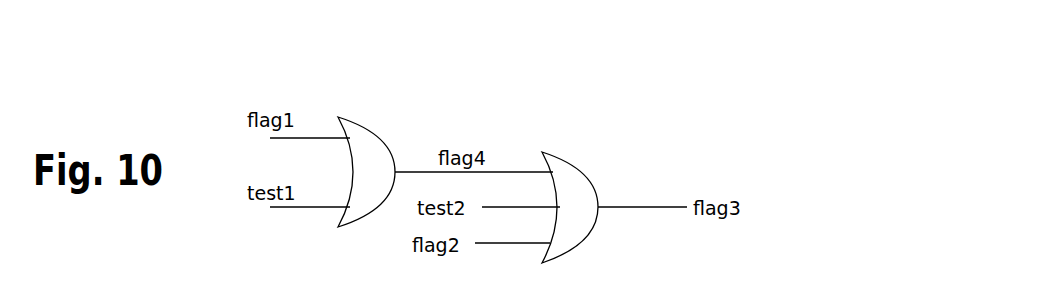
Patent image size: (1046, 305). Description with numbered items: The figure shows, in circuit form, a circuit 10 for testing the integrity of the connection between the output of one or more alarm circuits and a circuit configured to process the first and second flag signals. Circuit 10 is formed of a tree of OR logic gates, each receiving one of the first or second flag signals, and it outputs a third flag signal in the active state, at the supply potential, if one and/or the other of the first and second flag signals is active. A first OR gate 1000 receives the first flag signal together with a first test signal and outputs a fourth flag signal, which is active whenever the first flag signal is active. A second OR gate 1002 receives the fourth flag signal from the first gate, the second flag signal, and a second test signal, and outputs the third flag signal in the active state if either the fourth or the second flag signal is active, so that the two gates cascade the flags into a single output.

The circuit 10 is at (622, 77).
The first OR gate 1000 is at (367, 150).
The second OR gate 1002 is at (578, 190).